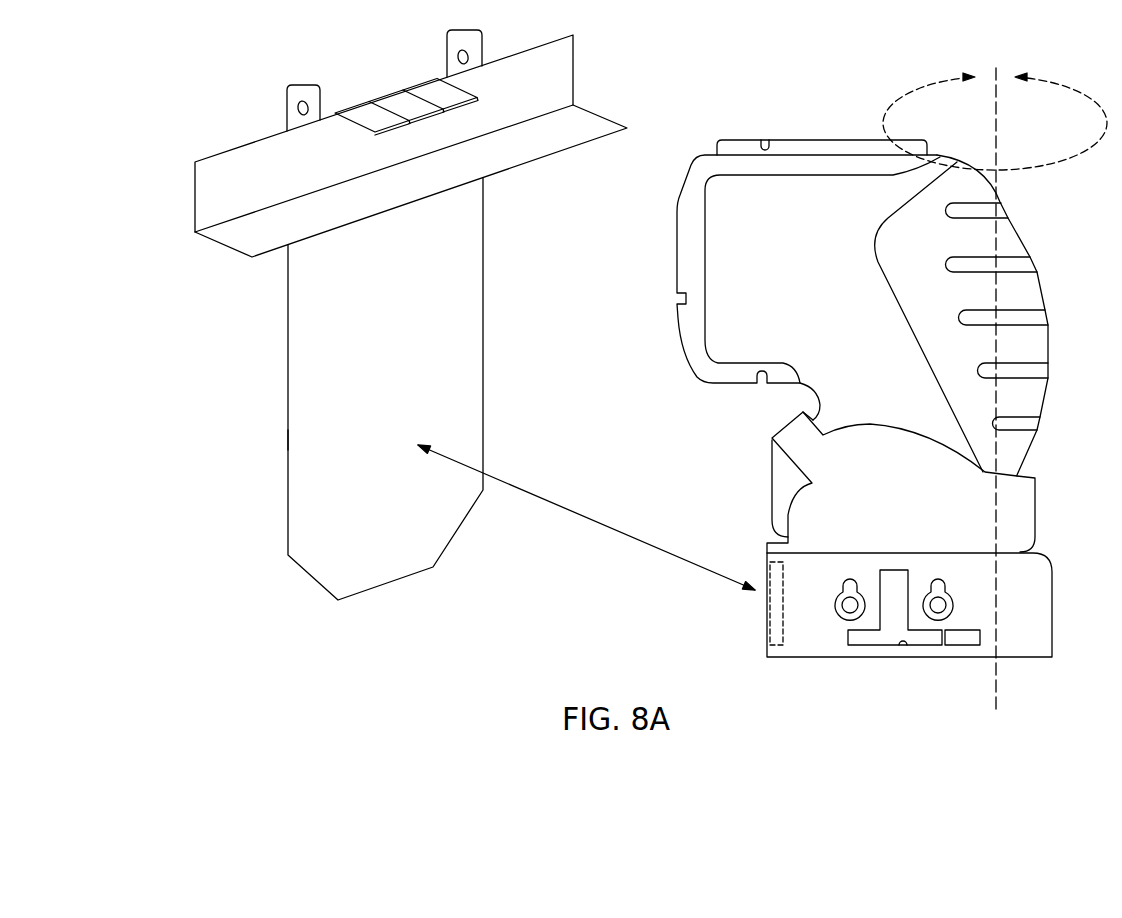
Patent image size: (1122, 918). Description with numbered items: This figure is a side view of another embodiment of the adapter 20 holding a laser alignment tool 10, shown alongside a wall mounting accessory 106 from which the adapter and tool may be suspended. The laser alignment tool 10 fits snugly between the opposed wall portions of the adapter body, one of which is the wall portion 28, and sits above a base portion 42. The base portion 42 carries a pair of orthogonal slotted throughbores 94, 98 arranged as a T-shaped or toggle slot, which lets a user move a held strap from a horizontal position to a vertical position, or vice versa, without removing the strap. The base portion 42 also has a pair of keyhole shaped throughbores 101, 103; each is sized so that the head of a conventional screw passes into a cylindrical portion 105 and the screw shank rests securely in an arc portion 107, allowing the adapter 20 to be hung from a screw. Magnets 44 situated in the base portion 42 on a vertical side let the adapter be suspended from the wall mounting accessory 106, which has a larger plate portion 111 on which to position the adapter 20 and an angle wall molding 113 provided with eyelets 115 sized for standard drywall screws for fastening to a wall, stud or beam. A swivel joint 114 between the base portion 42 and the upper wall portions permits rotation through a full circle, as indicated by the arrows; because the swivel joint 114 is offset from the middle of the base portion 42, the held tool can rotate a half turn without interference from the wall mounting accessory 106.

The laser alignment tool 10 is at (801, 271).
The adapter 20 is at (1035, 515).
The wall portion 28 is at (905, 508).
The base portion 42 is at (1052, 598).
The magnets 44 is at (768, 570).
The slotted throughbore 94 is at (903, 642).
The slotted throughbore 98 is at (887, 620).
The keyhole shaped throughbore 101 is at (847, 618).
The keyhole shaped throughbore 103 is at (947, 614).
The cylindrical portion 105 is at (826, 612).
The wall mounting accessory 106 is at (288, 438).
The arc portion 107 is at (850, 563).
The plate portion 111 is at (402, 373).
The angle wall molding 113 is at (567, 70).
The swivel joint 114 is at (1020, 650).
The eyelets 115 is at (302, 85).